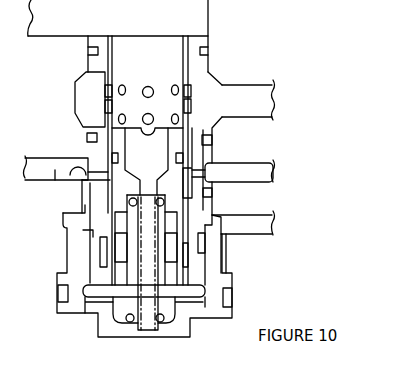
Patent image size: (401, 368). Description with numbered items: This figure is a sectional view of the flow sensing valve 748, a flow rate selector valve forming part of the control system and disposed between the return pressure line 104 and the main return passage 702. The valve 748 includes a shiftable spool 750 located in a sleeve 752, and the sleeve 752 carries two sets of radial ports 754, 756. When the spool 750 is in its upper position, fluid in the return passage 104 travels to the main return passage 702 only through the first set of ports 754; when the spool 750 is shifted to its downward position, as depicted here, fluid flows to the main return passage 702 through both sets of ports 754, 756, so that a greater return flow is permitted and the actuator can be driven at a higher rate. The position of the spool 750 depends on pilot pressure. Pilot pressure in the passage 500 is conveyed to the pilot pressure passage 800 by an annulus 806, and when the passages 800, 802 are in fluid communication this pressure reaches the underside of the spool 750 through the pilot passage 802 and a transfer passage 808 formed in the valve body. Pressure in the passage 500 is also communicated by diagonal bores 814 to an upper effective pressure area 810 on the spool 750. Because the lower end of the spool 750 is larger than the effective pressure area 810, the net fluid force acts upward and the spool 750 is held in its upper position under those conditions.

The return pressure line 104 is at (118, 28).
The flow sensing valve 748 is at (208, 58).
The radial ports 754 is at (172, 86).
The main return passage 702 is at (266, 111).
The radial ports 756 is at (148, 127).
The sleeve 752 is at (87, 136).
The diagonal bores 814 is at (87, 153).
The pilot pressure passage 500 is at (57, 181).
The annulus 806 is at (70, 175).
The shiftable spool 750 is at (182, 141).
The pilot pressure passage 800 is at (266, 181).
The upper effective pressure area 810 is at (212, 193).
The pilot passage 802 is at (241, 235).
The transfer passage 808 is at (207, 262).